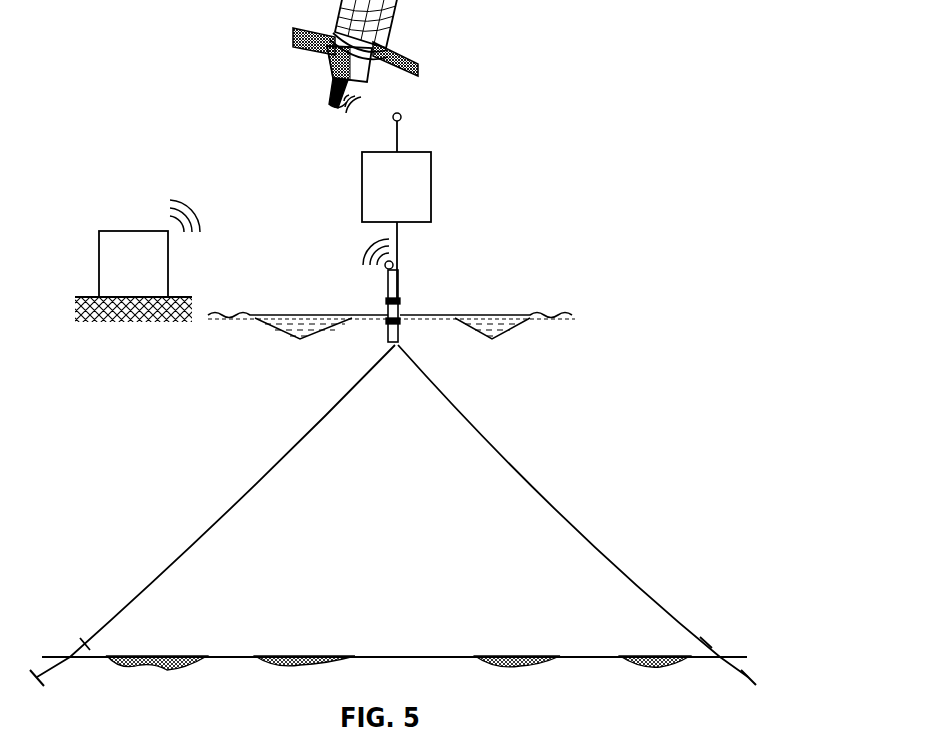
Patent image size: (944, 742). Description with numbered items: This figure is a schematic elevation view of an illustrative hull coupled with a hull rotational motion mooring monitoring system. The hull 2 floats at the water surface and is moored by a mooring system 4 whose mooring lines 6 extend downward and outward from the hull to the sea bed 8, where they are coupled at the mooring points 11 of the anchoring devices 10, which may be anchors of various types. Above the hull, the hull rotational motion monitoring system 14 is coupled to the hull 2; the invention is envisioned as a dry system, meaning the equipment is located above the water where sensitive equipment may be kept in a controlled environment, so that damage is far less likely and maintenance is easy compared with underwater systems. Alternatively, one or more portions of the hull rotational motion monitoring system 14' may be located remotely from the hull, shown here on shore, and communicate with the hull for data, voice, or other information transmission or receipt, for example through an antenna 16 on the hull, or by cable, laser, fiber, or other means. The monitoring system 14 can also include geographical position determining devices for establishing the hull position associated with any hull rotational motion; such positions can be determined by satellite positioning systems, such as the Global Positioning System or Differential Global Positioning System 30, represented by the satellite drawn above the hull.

The Differential Global Positioning System 30 is at (407, 54).
The hull rotational motion monitoring system 14 is at (408, 206).
The remotely located hull rotational motion monitoring system portion 14' is at (137, 259).
The antenna 16 is at (386, 271).
The hull 2 is at (405, 310).
The mooring system 4 is at (392, 511).
The mooring line 6 is at (185, 560).
The sea bed 8 is at (395, 655).
The mooring point 11 is at (87, 647).
The anchoring device 10 is at (72, 658).